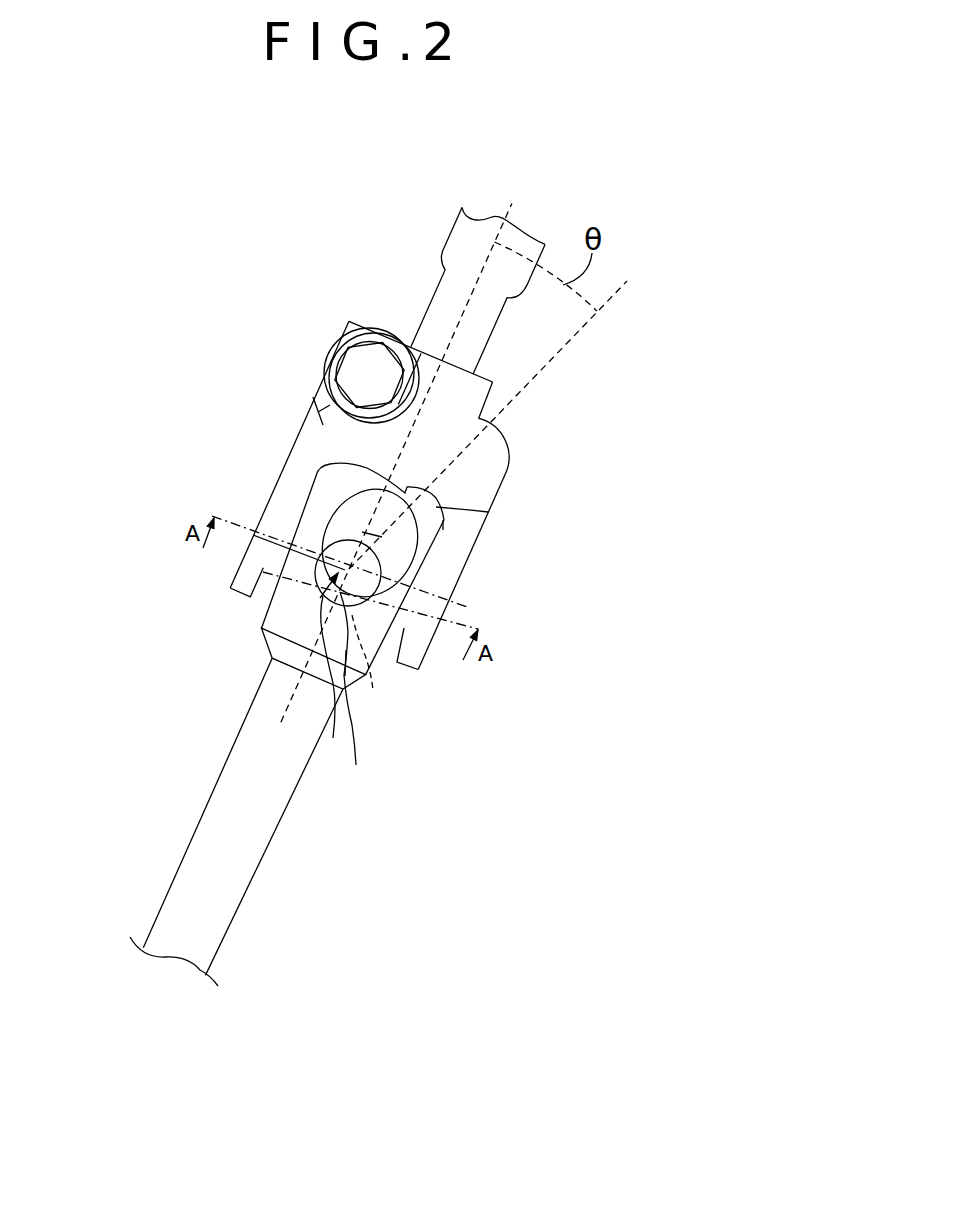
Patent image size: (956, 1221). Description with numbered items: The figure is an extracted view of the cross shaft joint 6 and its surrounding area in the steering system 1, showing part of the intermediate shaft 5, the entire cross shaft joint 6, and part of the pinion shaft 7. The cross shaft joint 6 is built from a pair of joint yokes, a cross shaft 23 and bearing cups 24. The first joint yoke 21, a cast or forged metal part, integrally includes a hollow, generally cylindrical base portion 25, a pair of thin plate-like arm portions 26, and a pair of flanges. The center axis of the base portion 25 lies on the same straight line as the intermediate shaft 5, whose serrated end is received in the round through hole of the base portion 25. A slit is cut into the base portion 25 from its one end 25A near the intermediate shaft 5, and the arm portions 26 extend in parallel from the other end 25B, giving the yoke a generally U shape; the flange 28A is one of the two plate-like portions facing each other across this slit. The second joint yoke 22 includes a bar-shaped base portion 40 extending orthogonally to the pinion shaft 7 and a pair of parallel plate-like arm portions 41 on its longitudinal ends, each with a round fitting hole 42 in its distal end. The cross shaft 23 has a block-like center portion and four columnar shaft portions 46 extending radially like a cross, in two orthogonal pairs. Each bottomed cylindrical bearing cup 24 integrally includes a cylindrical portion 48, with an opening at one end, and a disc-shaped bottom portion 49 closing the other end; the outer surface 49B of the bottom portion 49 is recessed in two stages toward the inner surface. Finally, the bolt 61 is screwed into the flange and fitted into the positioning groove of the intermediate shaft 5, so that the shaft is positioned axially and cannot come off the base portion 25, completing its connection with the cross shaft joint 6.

The steering system 1 is at (351, 1016).
The intermediate shaft 5 is at (497, 322).
The cross shaft joint 6 is at (303, 423).
The pinion shaft 7 is at (255, 862).
The first joint yoke 21 is at (501, 486).
The second joint yoke 22 is at (262, 623).
The cross shaft 23 is at (349, 688).
The bearing cup 24 is at (334, 682).
The base portion 25 is at (483, 450).
The one end 25A is at (487, 377).
The other end 25B is at (483, 515).
The arm portion 26 is at (460, 543).
The flange 28A is at (318, 412).
The base portion 40 is at (298, 655).
The arm portion 41 is at (367, 495).
The fitting hole 42 is at (380, 578).
The shaft portion 46 is at (277, 568).
The cylindrical portion 48 is at (382, 537).
The bottom portion 49 is at (400, 602).
The outer surface 49B is at (369, 695).
The bolt 61 is at (357, 373).